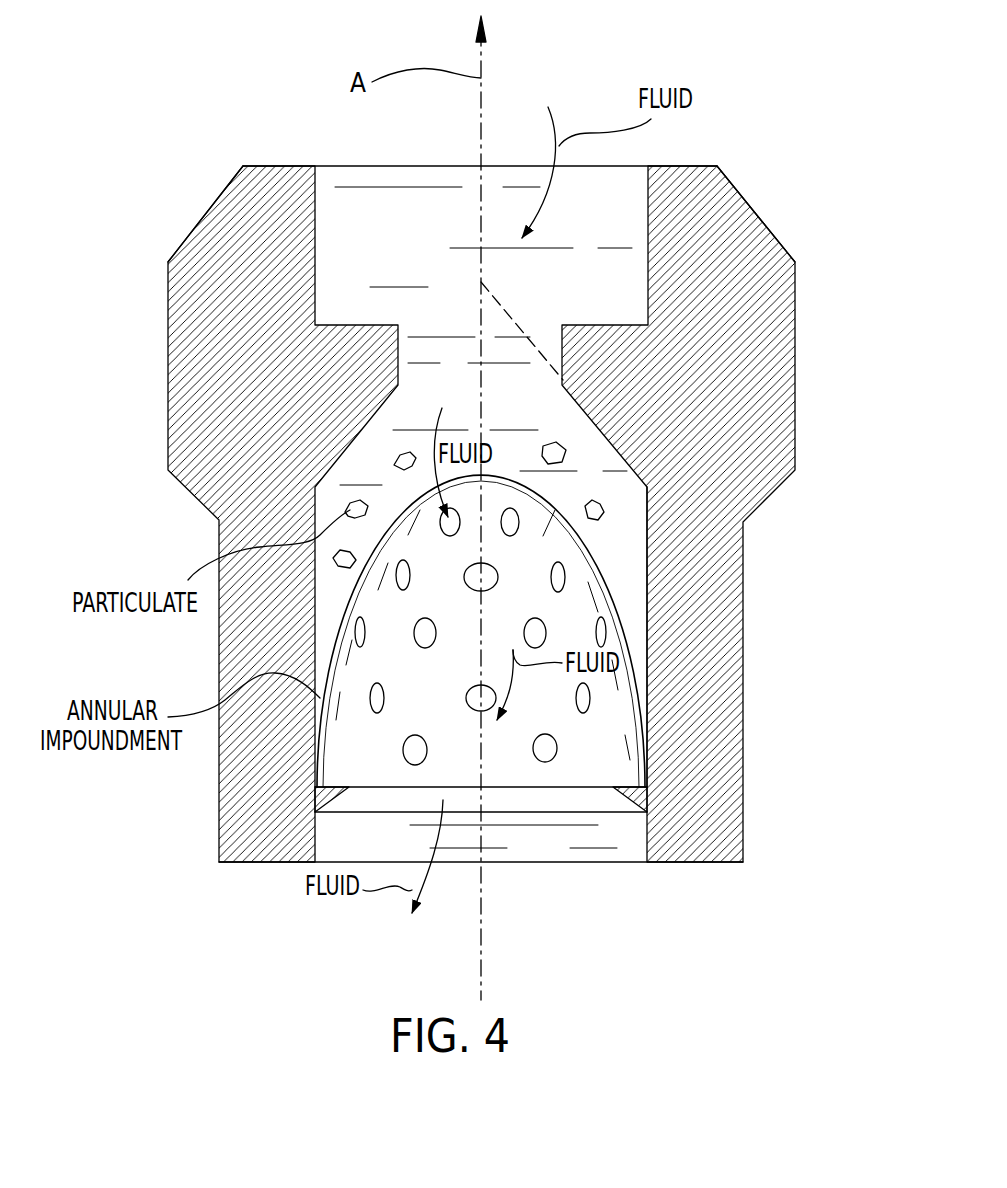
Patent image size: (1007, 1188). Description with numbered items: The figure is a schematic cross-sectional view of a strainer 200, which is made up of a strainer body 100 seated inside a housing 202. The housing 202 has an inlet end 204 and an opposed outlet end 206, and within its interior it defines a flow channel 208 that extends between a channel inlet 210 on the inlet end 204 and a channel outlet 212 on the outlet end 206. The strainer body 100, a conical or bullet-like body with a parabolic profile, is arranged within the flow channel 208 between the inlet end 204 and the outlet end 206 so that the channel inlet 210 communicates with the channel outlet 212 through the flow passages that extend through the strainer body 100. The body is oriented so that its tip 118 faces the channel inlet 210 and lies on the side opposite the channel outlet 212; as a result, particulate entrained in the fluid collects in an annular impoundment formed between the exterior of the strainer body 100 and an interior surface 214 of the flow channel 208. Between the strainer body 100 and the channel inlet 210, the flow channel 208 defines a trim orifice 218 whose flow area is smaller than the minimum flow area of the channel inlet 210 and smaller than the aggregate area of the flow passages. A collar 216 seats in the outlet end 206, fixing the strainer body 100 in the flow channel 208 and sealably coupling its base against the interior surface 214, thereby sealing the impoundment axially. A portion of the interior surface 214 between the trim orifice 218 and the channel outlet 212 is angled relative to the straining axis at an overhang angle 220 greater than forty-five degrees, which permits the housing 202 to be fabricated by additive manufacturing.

The strainer body 100 is at (563, 627).
The tip 118 is at (500, 472).
The strainer 200 is at (208, 888).
The housing 202 is at (746, 250).
The inlet end 204 is at (215, 138).
The outlet end 206 is at (203, 818).
The flow channel 208 is at (617, 492).
The channel inlet 210 is at (390, 224).
The channel outlet 212 is at (368, 838).
The interior surface 214 is at (649, 570).
The collar 216 is at (531, 419).
The trim orifice 218 is at (453, 364).
The overhang angle 220 is at (485, 344).